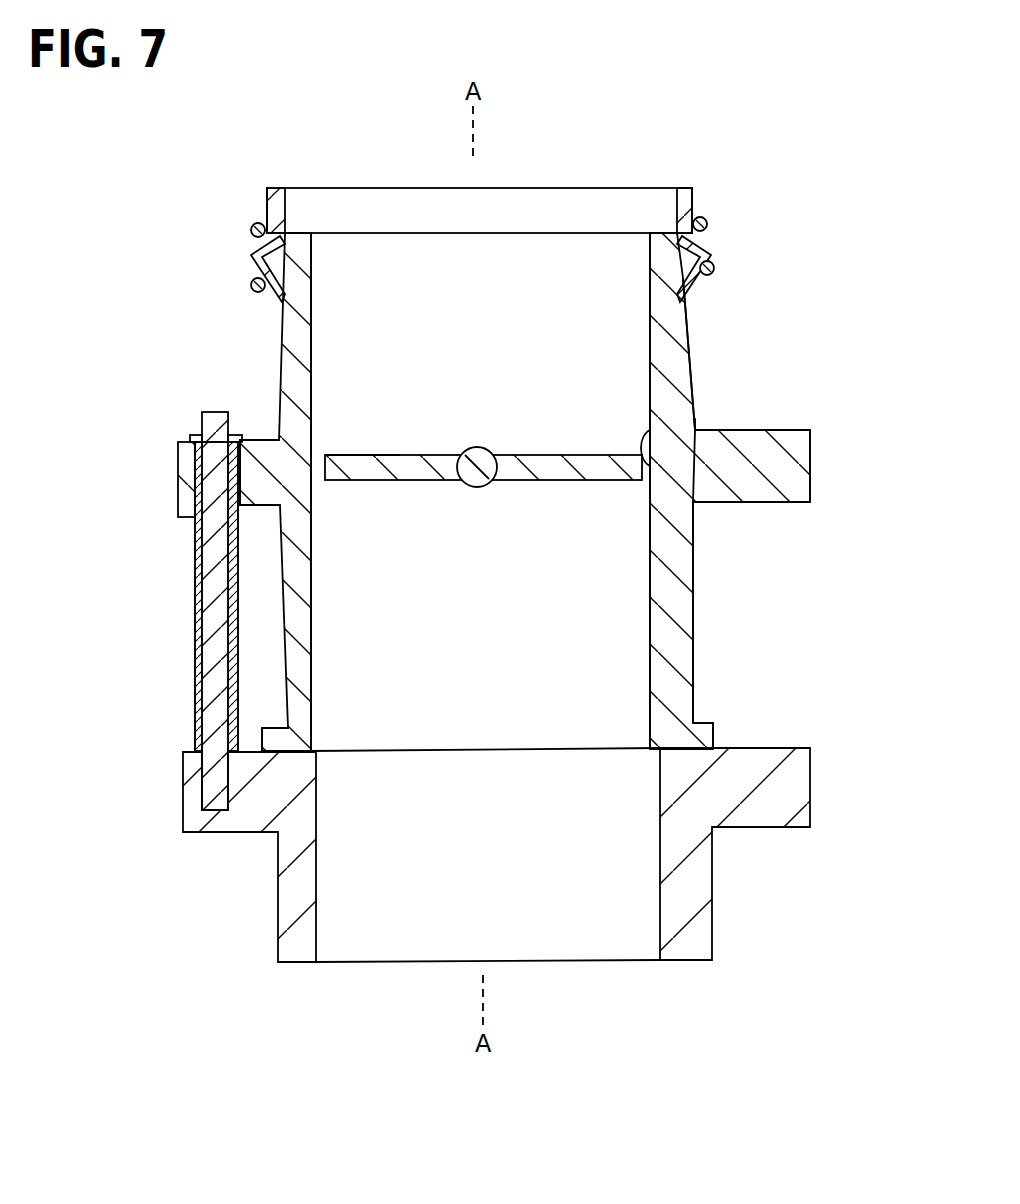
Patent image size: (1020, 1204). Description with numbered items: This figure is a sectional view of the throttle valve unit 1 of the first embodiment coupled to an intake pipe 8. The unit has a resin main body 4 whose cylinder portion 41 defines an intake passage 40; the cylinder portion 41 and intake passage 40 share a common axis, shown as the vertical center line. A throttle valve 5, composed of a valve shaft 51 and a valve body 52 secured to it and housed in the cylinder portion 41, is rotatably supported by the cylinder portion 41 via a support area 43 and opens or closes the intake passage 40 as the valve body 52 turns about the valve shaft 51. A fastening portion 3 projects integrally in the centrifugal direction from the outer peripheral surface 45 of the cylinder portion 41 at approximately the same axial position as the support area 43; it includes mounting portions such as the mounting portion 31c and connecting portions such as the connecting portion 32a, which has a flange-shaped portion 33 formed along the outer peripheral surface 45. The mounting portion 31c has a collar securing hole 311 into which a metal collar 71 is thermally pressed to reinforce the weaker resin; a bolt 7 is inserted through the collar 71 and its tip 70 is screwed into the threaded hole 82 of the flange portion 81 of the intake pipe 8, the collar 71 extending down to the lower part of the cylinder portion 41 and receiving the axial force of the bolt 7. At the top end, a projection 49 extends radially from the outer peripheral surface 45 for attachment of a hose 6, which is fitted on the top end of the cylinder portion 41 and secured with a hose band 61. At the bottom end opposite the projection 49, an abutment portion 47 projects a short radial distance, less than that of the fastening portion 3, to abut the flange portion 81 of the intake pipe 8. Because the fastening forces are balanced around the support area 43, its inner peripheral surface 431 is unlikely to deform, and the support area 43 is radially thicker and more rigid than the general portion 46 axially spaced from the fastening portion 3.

The apparatus 1 is at (745, 503).
The fastening portion 3 is at (258, 440).
The mounting portion 31c is at (182, 450).
The collar securing hole 311 is at (182, 513).
The connecting portion 32a is at (780, 465).
The flange-shaped portion 33 is at (748, 430).
The main body 4 is at (276, 350).
The intake passage 40 is at (333, 270).
The cylinder portion 41 is at (680, 645).
The support area 43 is at (707, 500).
The inner peripheral surface 431 is at (697, 418).
The outer peripheral surface 45 is at (693, 386).
The general portion 46 is at (680, 330).
The abutment portion 47 is at (713, 735).
The projection 49 is at (274, 253).
The throttle valve 5 is at (577, 446).
The valve shaft 51 is at (482, 462).
The valve body 52 is at (378, 463).
The hose 6 is at (692, 200).
The hose band 61 is at (706, 226).
The bolt 7 is at (220, 645).
The tip 70 is at (215, 783).
The collar 71 is at (197, 577).
The intake pipe 8 is at (712, 905).
The flange portion 81 is at (792, 790).
The threaded hole 82 is at (215, 812).